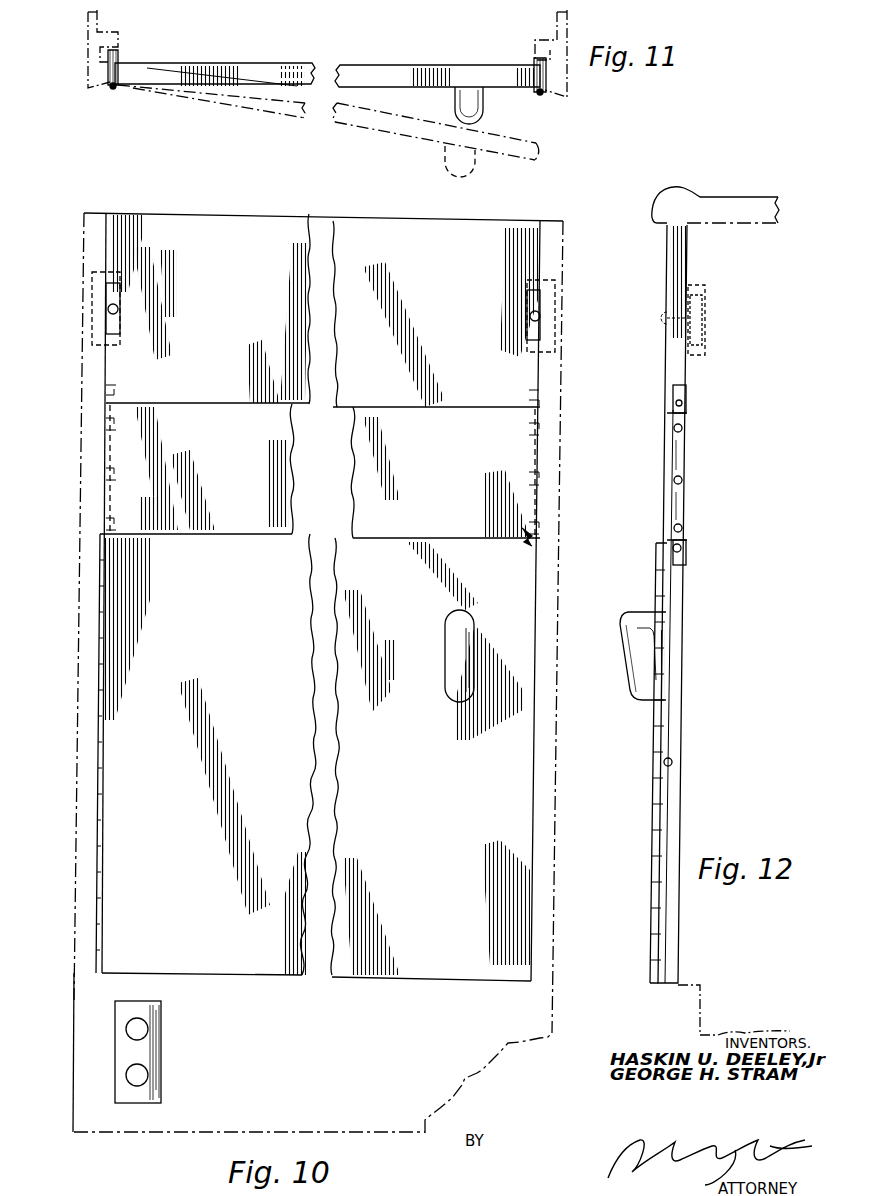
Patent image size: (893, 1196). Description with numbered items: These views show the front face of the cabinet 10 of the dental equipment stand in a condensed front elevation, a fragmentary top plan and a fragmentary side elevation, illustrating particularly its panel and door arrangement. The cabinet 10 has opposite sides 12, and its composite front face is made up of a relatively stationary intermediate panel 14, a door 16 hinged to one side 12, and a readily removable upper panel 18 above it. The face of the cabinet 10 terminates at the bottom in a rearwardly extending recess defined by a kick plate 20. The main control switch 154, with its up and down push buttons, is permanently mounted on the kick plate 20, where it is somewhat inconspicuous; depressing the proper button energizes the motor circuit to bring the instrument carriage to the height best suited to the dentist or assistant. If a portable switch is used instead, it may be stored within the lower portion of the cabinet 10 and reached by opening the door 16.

In FIG. 11, the cabinet 10 is at (571, 90).
In FIG. 10, the cabinet 10 is at (567, 590).
In FIG. 11, the side 12 is at (89, 34).
In FIG. 10, the side 12 is at (84, 752).
In FIG. 12, the side 12 is at (690, 934).
In FIG. 10, the intermediate panel 14 is at (520, 464).
In FIG. 12, the intermediate panel 14 is at (668, 466).
In FIG. 11, the door 16 is at (472, 73).
In FIG. 10, the door 16 is at (530, 683).
In FIG. 12, the door 16 is at (646, 689).
In FIG. 10, the upper panel 18 is at (522, 278).
In FIG. 12, the upper panel 18 is at (672, 287).
In FIG. 10, the kick plate 20 is at (92, 1045).
In FIG. 12, the kick plate 20 is at (700, 960).
In FIG. 10, the main control switch 154 is at (163, 1012).